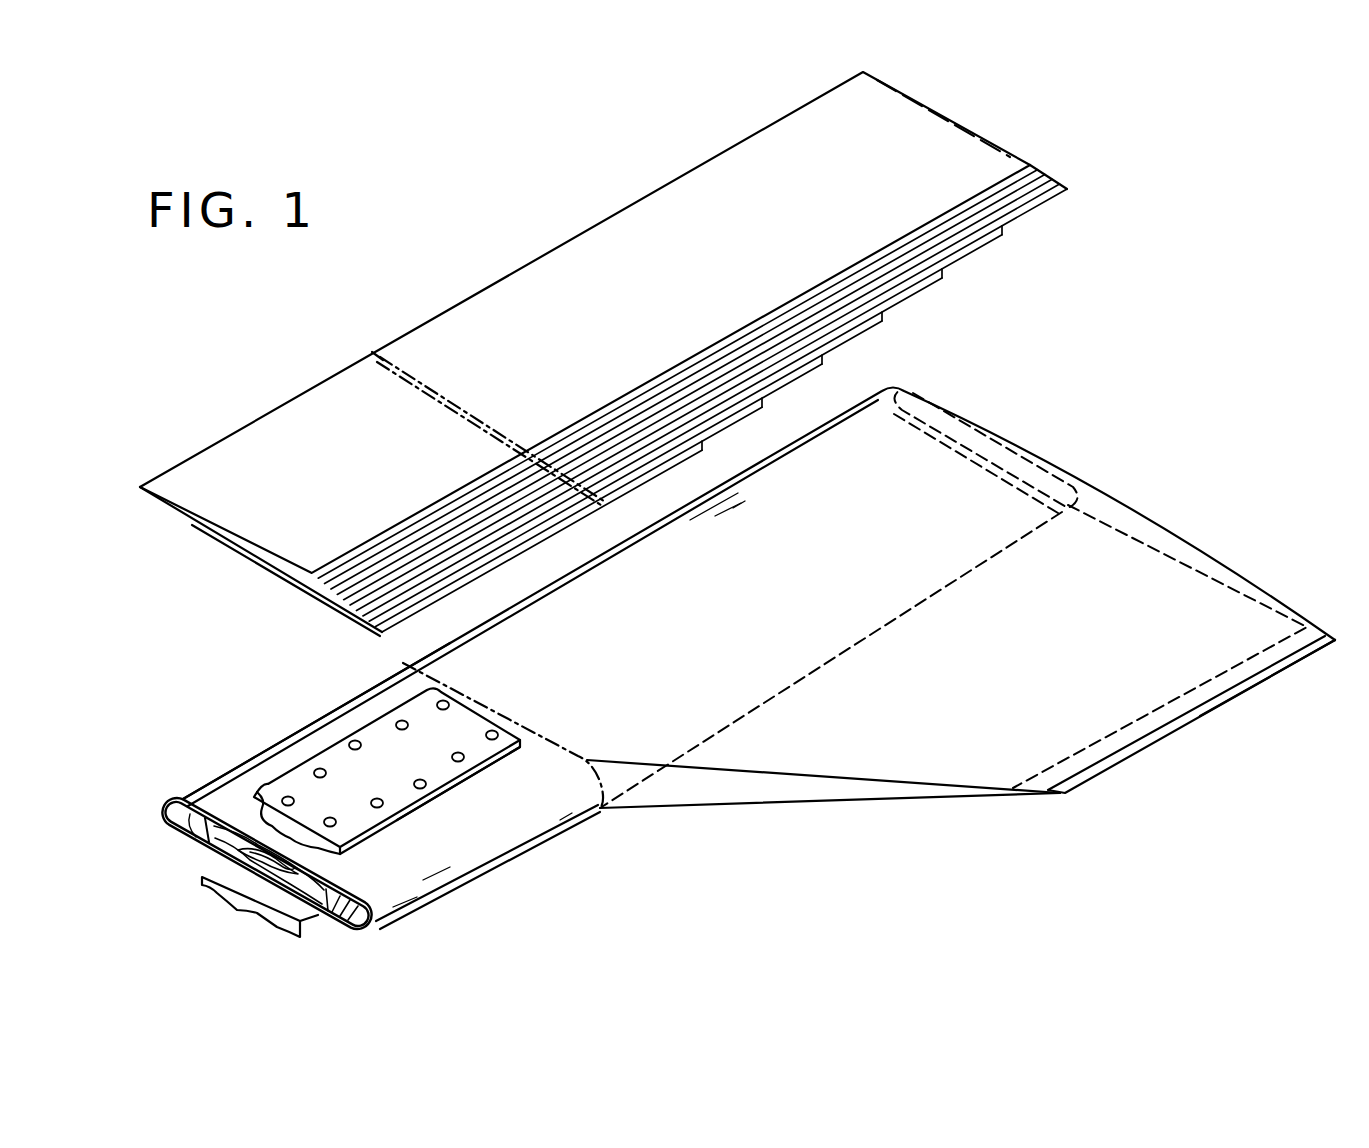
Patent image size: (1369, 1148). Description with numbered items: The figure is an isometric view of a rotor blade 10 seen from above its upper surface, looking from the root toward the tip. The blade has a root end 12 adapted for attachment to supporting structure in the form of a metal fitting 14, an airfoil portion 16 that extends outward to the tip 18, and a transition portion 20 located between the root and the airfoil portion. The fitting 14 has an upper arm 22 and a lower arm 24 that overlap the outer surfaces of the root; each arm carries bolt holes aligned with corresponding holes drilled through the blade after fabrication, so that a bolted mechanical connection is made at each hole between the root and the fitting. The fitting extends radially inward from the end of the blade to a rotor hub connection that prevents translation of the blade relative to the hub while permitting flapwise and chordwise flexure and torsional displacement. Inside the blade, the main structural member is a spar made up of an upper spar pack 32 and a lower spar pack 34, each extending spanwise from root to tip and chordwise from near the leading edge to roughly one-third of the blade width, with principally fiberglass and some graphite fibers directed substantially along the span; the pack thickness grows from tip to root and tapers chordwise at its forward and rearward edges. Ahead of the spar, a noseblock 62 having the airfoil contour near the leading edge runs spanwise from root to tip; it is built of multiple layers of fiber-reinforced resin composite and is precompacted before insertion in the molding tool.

The rotor blade 10 is at (917, 380).
The root end 12 is at (518, 866).
The metal fitting 14 is at (414, 771).
The airfoil portion 16 is at (283, 750).
The tip 18 is at (1100, 484).
The transition portion 20 is at (793, 760).
The upper arm 22 is at (397, 820).
The lower arm 24 is at (230, 905).
The upper spar pack 32 is at (212, 810).
The lower spar pack 34 is at (215, 865).
The noseblock 62 is at (170, 815).